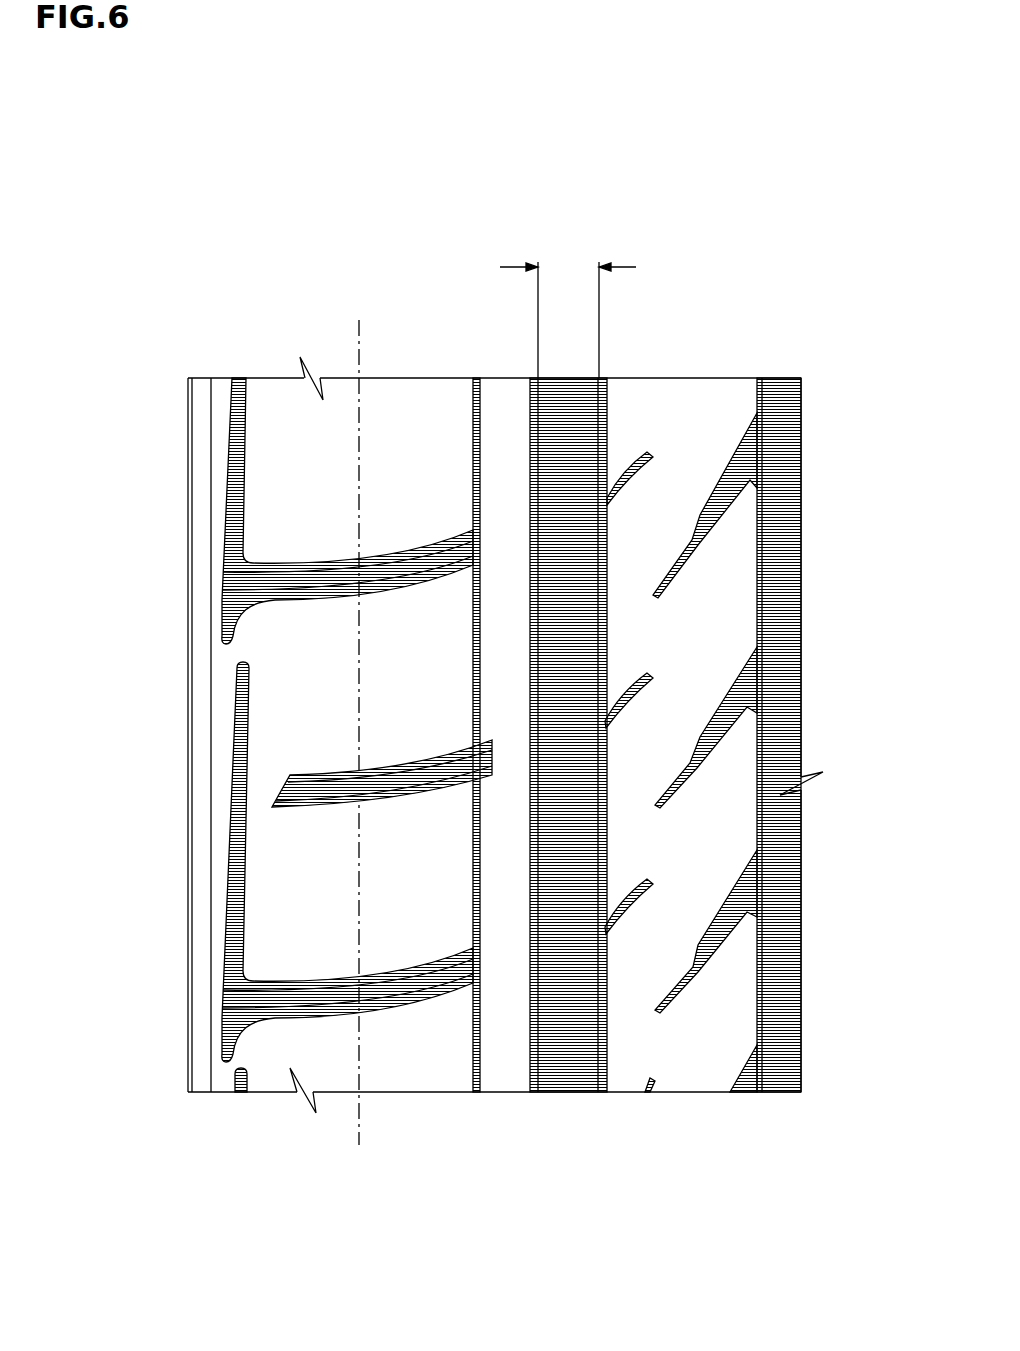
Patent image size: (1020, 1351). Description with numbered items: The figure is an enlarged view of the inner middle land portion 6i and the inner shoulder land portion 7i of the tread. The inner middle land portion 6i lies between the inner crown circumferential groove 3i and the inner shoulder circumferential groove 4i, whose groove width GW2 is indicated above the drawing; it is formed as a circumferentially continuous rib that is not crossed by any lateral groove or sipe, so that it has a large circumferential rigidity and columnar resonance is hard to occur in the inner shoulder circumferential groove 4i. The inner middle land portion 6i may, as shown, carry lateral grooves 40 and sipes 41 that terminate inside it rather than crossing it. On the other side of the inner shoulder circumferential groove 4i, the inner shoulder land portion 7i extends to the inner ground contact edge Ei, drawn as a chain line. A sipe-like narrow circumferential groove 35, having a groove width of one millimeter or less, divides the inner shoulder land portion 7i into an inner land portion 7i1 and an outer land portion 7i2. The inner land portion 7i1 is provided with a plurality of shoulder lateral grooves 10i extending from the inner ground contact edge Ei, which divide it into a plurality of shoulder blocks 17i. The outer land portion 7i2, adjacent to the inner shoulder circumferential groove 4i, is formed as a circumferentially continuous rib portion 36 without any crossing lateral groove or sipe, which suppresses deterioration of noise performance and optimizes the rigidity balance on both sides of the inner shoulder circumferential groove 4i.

The inner ground contact edge Ei is at (357, 716).
The shoulder lateral grooves 10i is at (403, 565).
The shoulder blocks 17i is at (443, 480).
The narrow circumferential groove 35 is at (473, 413).
The inner shoulder circumferential groove 4i is at (588, 442).
The groove width of the shoulder circumferential grooves GW2 is at (568, 308).
The inner crown circumferential groove 3i is at (792, 410).
The lateral grooves 40 is at (710, 515).
The sipes 41 is at (637, 677).
The inner middle land portion 6i is at (703, 1068).
The inner land portion 7i1 is at (407, 1067).
The outer land portion 7i2 is at (498, 1067).
The rib portion 36 is at (536, 1211).
The inner shoulder land portion 7i is at (577, 1215).